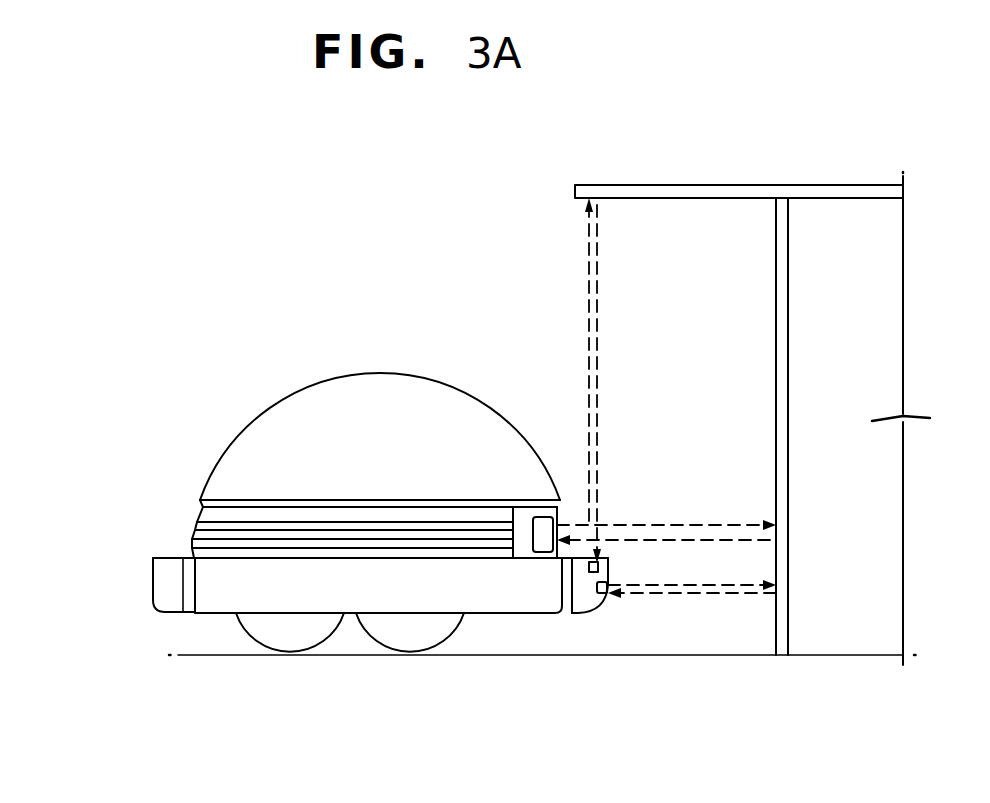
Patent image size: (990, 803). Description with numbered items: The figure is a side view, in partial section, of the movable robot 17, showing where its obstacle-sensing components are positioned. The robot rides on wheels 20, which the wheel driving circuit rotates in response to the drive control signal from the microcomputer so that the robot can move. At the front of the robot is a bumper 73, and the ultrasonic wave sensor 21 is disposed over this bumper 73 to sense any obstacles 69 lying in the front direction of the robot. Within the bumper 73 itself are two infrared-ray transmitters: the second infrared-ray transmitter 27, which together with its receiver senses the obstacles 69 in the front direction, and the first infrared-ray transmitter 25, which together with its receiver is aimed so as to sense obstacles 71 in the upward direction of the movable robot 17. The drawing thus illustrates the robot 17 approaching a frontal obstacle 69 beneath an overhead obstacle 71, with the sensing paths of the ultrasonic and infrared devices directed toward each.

The movable robot 17 is at (285, 398).
The wheels 20 is at (406, 655).
The ultrasonic wave sensor 21 is at (558, 520).
The first infrared-ray transmitter 25 is at (590, 574).
The second infrared-ray transmitter 27 is at (601, 607).
The obstacles 69 is at (775, 282).
The obstacles 71 is at (668, 190).
The bumper 73 is at (587, 606).